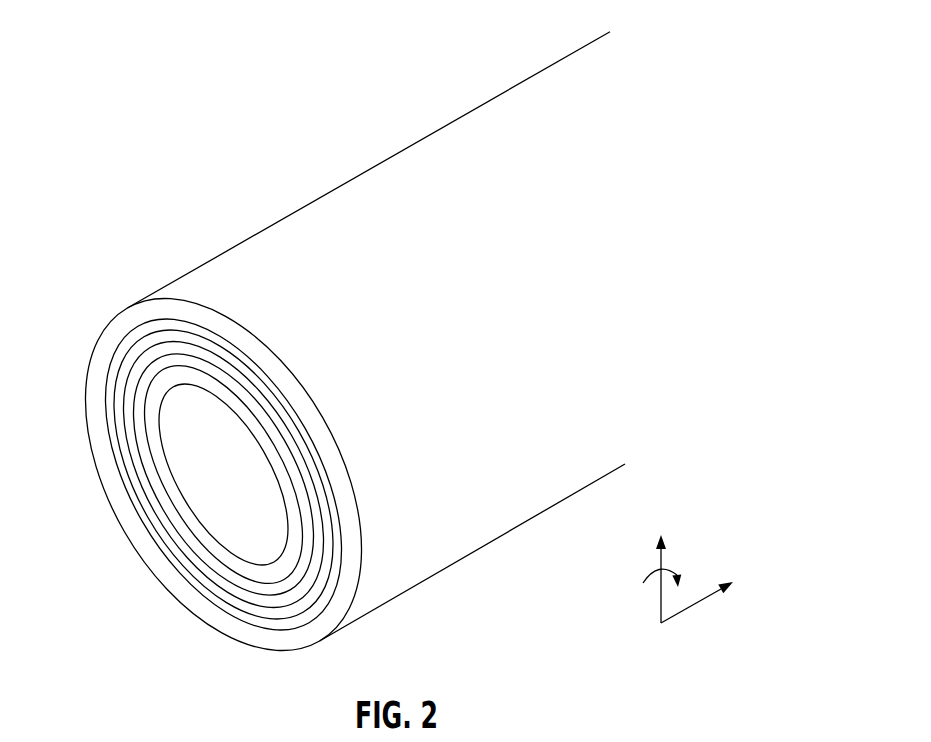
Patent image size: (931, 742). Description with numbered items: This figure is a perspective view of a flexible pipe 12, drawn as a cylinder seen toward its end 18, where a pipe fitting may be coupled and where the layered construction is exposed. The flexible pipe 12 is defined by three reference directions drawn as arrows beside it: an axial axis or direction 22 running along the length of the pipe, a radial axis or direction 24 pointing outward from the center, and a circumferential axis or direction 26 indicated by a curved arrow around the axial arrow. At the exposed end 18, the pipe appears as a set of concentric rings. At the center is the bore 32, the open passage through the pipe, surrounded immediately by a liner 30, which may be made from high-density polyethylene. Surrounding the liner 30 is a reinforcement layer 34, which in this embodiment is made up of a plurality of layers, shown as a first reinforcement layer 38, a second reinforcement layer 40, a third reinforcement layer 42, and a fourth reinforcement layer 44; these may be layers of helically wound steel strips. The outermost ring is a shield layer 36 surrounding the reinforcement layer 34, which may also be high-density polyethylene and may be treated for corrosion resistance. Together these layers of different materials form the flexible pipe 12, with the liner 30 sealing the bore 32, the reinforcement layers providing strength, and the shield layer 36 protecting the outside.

The flexible pipe 12 is at (234, 147).
The end of the flexible pipe 18 is at (415, 587).
The axial axis or direction 22 is at (697, 607).
The radial axis or direction 24 is at (660, 597).
The circumferential axis or direction 26 is at (679, 568).
The liner 30 is at (230, 413).
The bore 32 is at (237, 538).
The reinforcement layer 34 is at (129, 540).
The shield layer 36 is at (103, 340).
The first reinforcement layer 38 is at (297, 474).
The second reinforcement layer 40 is at (287, 428).
The third reinforcement layer 42 is at (272, 391).
The fourth reinforcement layer 44 is at (252, 358).